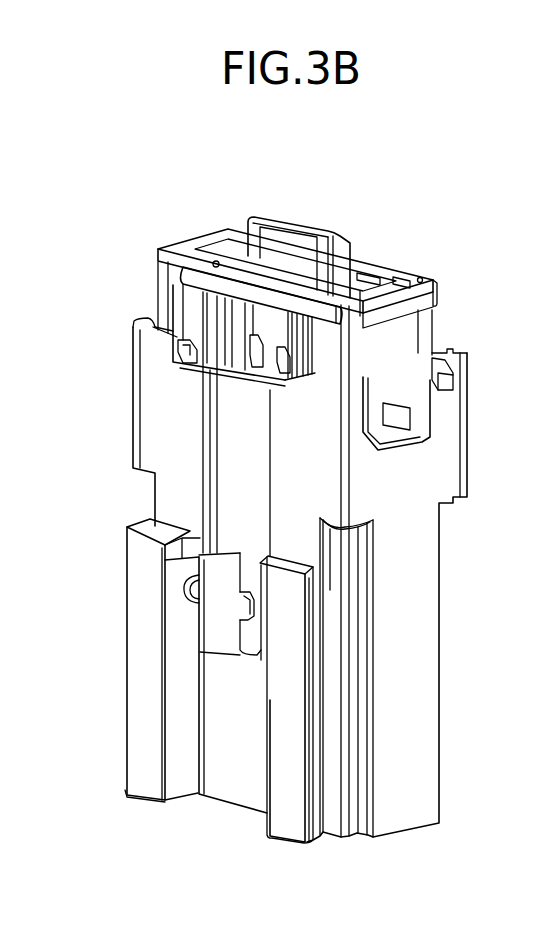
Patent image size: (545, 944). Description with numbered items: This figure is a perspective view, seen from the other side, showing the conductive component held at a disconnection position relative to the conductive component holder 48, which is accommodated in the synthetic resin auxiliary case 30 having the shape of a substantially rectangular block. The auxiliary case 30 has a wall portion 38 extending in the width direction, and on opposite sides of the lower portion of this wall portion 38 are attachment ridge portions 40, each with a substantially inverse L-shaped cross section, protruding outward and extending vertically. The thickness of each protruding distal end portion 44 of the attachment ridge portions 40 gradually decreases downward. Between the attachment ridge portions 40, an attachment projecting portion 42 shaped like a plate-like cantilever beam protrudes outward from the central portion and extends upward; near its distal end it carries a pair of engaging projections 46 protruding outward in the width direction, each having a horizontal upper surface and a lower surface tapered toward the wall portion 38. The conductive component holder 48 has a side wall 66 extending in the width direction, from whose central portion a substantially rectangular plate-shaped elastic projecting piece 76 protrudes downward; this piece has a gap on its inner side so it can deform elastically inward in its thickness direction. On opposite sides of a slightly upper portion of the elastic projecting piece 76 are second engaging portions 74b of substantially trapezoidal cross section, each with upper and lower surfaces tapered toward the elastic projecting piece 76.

The auxiliary case 30 is at (413, 642).
The wall portion 38 is at (183, 490).
The attachment ridge portion 40 is at (150, 638).
The attachment projecting portion 42 is at (220, 637).
The protruding distal end portion 44 is at (133, 673).
The engaging projection 46 is at (240, 600).
The conductive component holder 48 is at (410, 223).
The side wall 66 is at (272, 332).
The second engaging portion 74b is at (270, 357).
The elastic projecting piece 76 is at (137, 325).